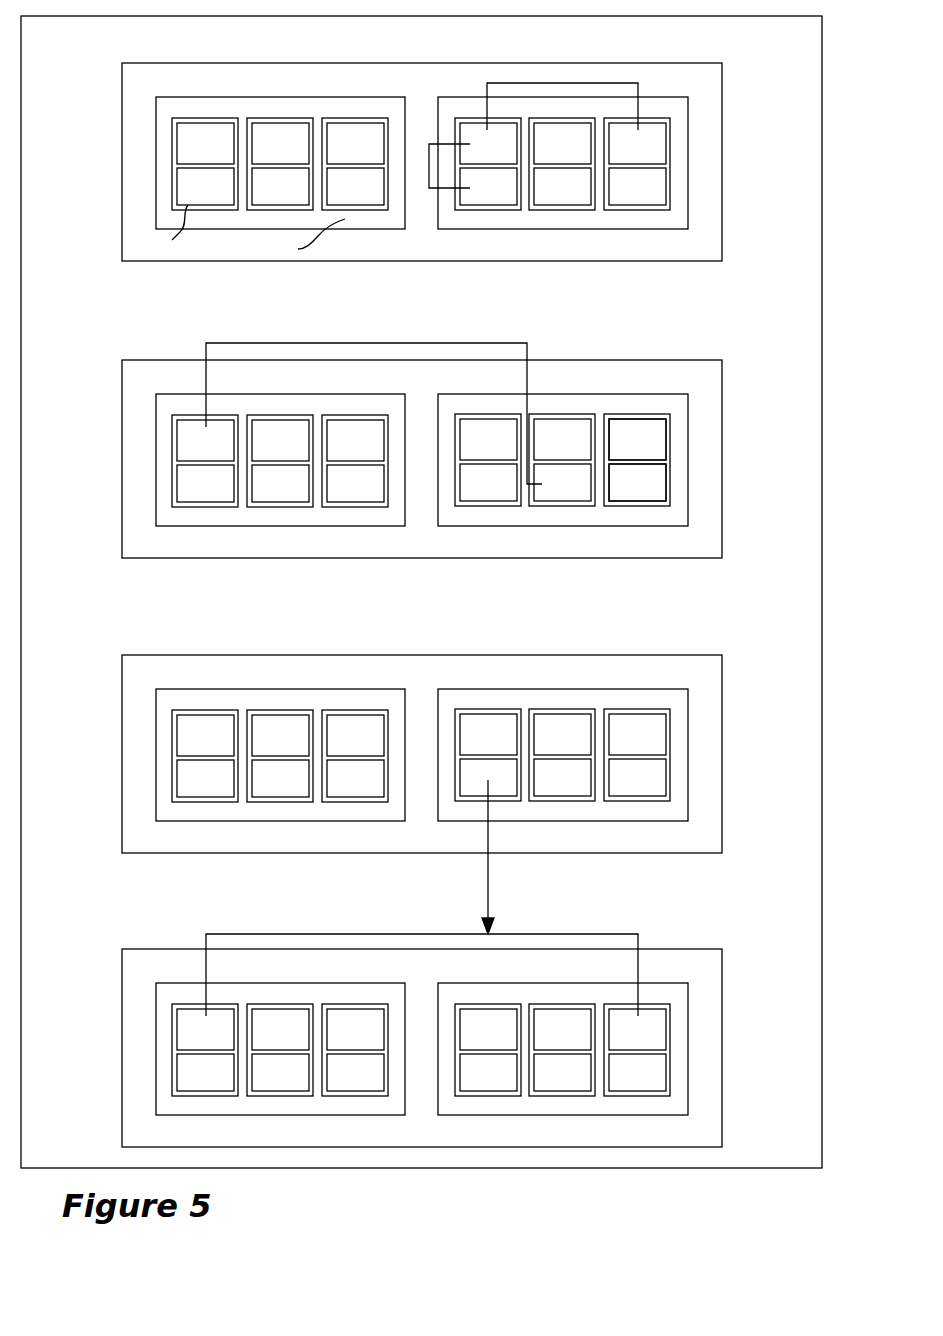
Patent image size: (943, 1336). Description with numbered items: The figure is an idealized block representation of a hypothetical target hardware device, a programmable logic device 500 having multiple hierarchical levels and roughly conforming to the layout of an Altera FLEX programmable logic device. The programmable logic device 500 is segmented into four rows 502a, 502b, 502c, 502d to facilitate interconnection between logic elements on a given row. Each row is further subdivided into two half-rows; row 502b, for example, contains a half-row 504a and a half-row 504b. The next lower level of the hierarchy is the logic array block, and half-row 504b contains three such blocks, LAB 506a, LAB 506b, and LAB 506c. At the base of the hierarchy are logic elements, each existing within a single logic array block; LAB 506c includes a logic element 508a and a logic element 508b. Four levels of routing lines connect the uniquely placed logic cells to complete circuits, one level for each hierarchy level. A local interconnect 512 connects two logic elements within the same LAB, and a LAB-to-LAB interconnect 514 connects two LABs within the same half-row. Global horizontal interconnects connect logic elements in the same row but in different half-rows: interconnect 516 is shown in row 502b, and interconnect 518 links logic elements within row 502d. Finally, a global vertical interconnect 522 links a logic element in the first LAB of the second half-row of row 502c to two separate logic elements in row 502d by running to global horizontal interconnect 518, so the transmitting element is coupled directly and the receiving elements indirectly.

The programmable logic device 500 is at (625, 1168).
The row 502a is at (708, 132).
The row 502b is at (467, 464).
The row 502c is at (705, 698).
The row 502d is at (703, 1018).
The half-row 504a is at (263, 520).
The half-row 504b is at (551, 464).
The logic array block 506a is at (480, 505).
The logic array block 506b is at (567, 505).
The logic array block 506c is at (662, 505).
The logic element 508a is at (635, 428).
The logic element 508b is at (660, 486).
The local interconnect 512 is at (429, 177).
The LAB-to-LAB interconnect 514 is at (513, 83).
The global horizontal interconnect 516 is at (263, 343).
The global horizontal interconnect 518 is at (640, 945).
The global vertical interconnect 522 is at (488, 910).